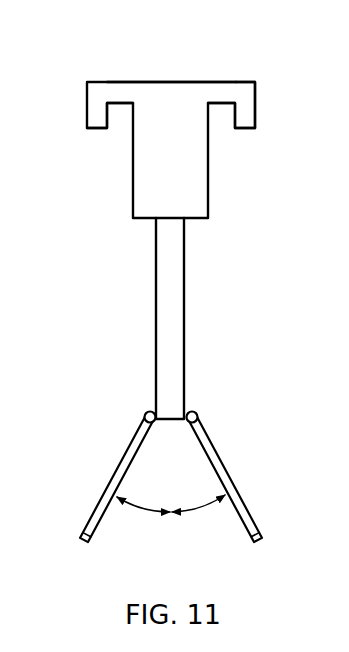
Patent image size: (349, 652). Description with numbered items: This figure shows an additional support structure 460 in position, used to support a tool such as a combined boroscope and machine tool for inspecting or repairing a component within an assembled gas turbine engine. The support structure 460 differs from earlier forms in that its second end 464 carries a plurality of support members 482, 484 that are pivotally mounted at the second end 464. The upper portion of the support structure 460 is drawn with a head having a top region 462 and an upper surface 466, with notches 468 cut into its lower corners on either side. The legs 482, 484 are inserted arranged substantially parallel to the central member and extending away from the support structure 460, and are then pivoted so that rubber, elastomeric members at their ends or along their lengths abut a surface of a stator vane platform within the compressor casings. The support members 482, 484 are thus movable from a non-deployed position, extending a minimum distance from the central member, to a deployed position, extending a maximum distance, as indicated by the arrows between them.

The support structure 460 is at (193, 171).
The head top portion 462 is at (243, 82).
The second end 464 is at (175, 407).
The top surface of head 466 is at (108, 82).
The notches 468 is at (98, 121).
The support member 482 is at (122, 466).
The support member 484 is at (217, 462).